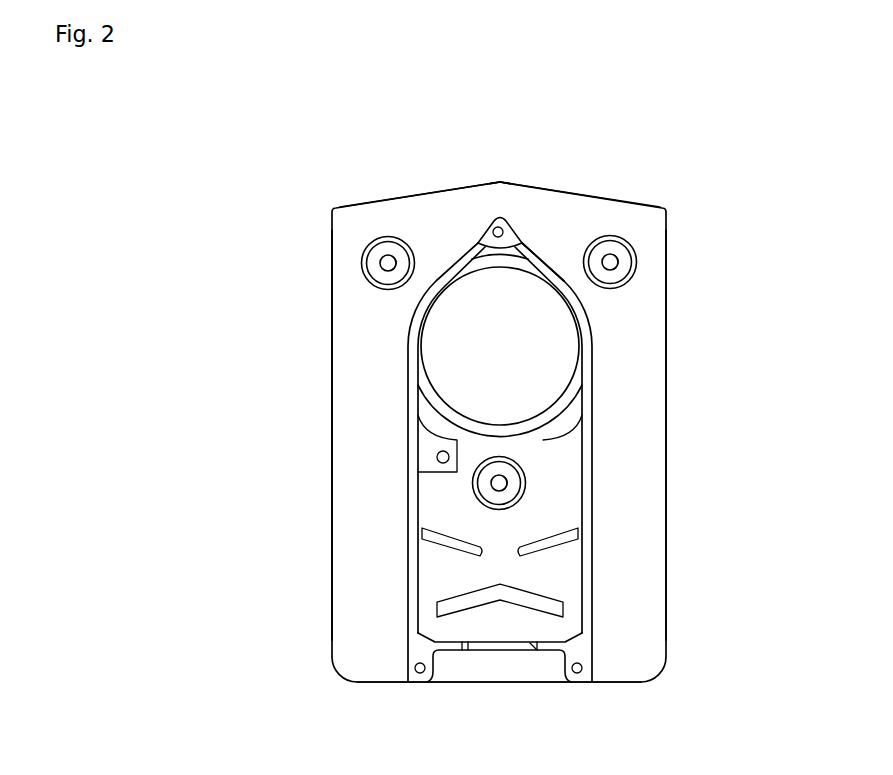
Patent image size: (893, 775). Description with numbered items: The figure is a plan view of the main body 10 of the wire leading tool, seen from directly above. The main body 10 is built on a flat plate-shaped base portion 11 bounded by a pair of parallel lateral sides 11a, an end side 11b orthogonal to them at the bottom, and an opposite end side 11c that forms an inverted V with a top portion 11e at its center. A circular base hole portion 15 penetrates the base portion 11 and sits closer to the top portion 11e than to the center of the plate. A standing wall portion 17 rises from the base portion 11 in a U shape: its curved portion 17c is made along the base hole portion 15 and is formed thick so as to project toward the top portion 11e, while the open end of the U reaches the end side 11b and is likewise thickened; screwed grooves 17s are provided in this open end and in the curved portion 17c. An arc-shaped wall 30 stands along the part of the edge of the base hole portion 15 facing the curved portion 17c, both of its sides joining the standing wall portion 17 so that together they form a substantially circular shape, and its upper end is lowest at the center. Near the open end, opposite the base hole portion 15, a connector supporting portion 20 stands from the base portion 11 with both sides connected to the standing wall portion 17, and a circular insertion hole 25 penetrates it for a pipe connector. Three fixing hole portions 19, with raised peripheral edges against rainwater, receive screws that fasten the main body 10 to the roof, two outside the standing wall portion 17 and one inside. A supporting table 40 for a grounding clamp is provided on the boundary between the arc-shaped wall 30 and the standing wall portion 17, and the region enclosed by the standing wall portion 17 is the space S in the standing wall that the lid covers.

The main body 10 is at (278, 143).
The base portion 11 is at (653, 380).
The lateral sides 11a is at (330, 588).
The end side 11b is at (452, 683).
The end side 11c is at (460, 187).
The top portion 11e is at (500, 180).
The base hole portion 15 is at (579, 322).
The standing wall portion 17 is at (408, 492).
The screwed grooves 17s is at (495, 226).
The curved portion 17c is at (532, 247).
The fixing hole portions 19 is at (383, 263).
The connector supporting portion 20 is at (500, 648).
The insertion hole 25 is at (532, 648).
The arc-shaped wall 30 is at (547, 431).
The supporting table 40 is at (430, 443).
The space in the standing wall S is at (453, 514).